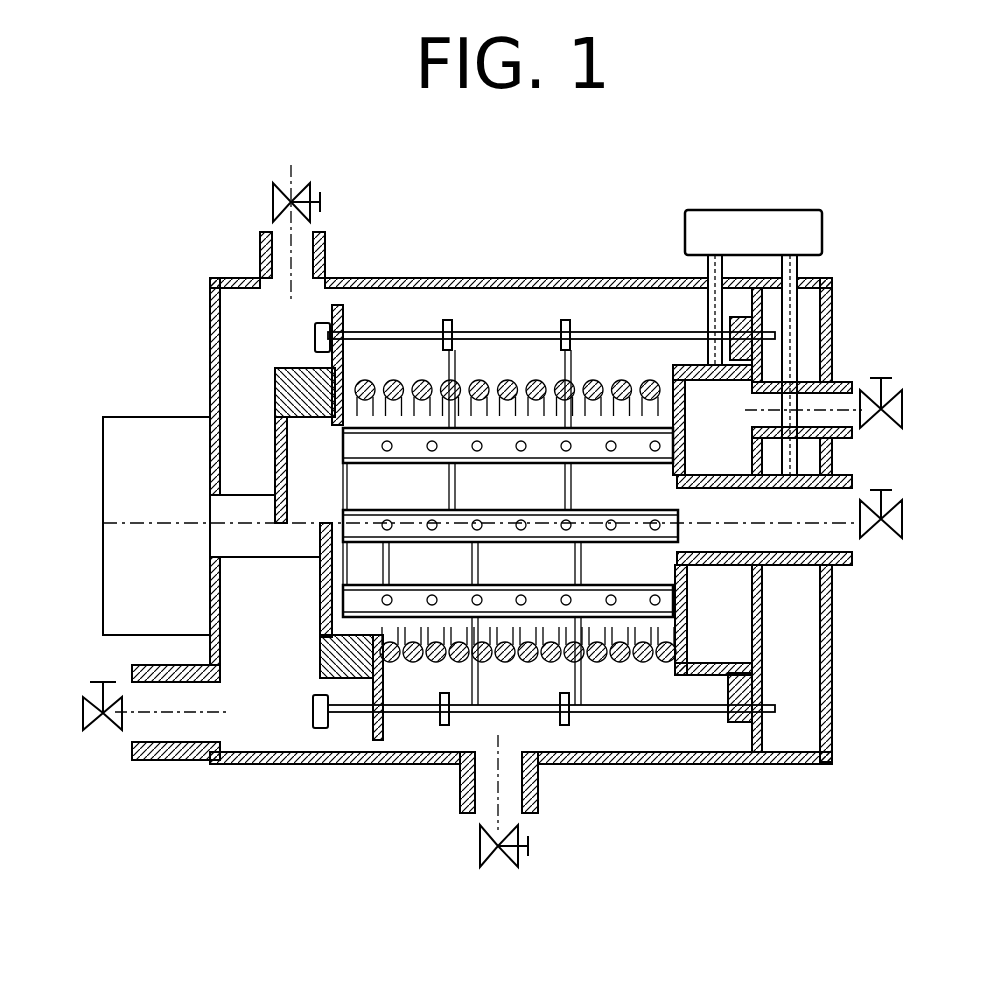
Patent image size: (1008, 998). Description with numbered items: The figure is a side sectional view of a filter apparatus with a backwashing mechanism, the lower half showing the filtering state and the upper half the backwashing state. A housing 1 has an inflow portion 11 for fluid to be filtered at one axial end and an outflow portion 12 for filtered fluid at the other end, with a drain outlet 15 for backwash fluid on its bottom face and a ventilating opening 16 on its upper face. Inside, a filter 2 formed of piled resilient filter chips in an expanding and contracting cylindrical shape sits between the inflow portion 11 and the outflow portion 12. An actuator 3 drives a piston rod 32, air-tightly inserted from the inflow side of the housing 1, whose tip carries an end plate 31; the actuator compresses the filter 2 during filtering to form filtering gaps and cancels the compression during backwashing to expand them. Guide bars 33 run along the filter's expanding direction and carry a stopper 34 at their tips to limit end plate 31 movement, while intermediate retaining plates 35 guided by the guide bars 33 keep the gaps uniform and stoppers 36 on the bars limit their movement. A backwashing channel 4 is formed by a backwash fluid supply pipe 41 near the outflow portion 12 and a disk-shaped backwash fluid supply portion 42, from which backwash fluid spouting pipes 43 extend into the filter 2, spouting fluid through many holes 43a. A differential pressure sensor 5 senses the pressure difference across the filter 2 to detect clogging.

The housing 1 is at (535, 268).
The filter 2 is at (490, 368).
The actuator 3 is at (123, 408).
The backwashing channel 4 is at (899, 302).
The differential pressure sensor 5 is at (755, 200).
The inflow portion 11 is at (177, 760).
The outflow portion 12 is at (857, 562).
The drain outlet 15 is at (530, 813).
The ventilating opening 16 is at (262, 250).
The end plate 31 is at (276, 376).
The piston rod 32 is at (268, 560).
The guide bars 33 is at (380, 332).
The stopper 34 is at (323, 320).
The intermediate retaining plates 35 is at (457, 345).
The stoppers 36 is at (441, 320).
The backwash fluid supply pipe 41 is at (853, 382).
The backwash fluid supply portion 42 is at (798, 358).
The backwash fluid spouting pipes 43 is at (592, 485).
The holes 43a is at (523, 548).